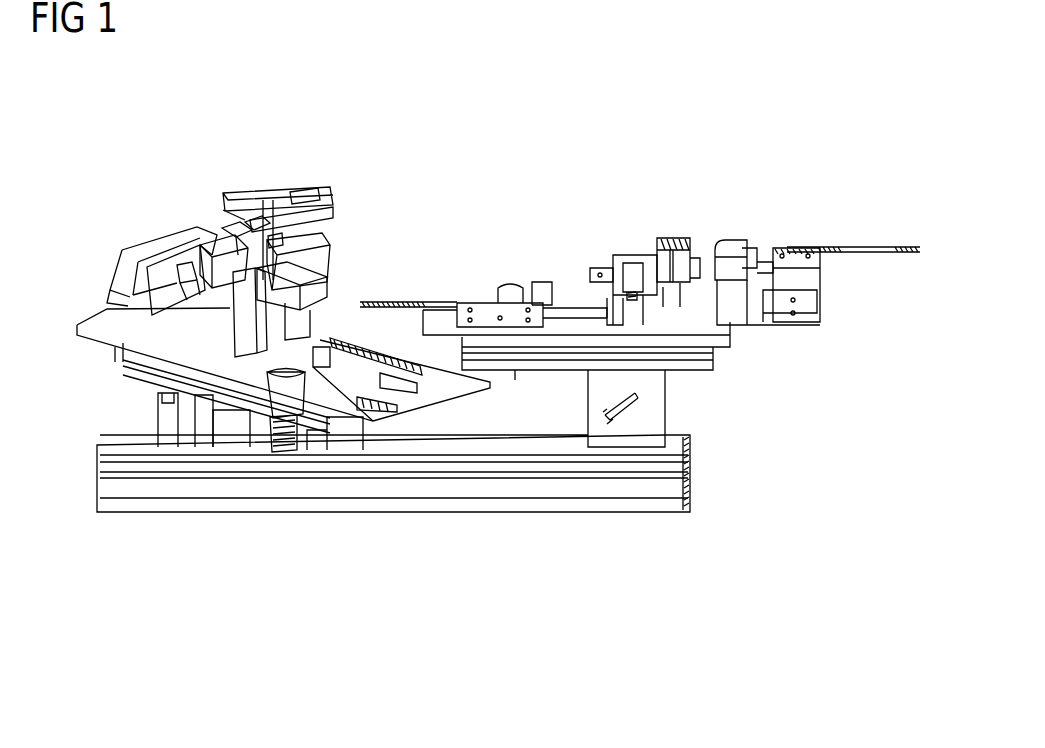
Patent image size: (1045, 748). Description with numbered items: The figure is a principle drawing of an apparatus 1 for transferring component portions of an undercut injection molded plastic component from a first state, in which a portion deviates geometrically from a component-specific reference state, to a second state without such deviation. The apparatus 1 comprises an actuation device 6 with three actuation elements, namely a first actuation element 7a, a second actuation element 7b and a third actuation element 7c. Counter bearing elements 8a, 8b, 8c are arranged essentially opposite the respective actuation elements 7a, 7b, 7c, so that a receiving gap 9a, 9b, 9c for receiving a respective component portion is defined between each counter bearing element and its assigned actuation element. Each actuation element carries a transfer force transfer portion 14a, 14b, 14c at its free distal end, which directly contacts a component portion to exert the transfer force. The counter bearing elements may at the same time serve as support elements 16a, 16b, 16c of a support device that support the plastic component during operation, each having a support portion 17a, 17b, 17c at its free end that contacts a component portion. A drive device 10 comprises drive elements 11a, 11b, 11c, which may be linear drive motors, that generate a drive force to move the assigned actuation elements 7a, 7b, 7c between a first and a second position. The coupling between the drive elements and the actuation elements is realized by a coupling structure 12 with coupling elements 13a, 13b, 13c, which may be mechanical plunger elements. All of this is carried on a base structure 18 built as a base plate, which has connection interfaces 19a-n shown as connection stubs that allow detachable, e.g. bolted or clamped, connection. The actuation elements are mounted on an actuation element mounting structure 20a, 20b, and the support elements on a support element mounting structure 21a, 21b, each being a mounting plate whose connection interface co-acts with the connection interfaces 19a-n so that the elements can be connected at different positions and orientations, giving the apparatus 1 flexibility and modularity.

The apparatus 1 is at (758, 90).
The actuation device 6 is at (538, 190).
The first actuation element 7a is at (186, 327).
The second actuation element 7b is at (337, 187).
The third actuation element 7c is at (620, 240).
The counter bearing element 8a is at (127, 234).
The support element 16a is at (133, 248).
The counter bearing element 8b is at (364, 255).
The support element 16b is at (313, 233).
The counter bearing element 8c is at (767, 244).
The support element 16c is at (737, 243).
The receiving gap 9a is at (172, 270).
The receiving gap 9b is at (322, 213).
The receiving gap 9c is at (707, 240).
The drive device 10 is at (242, 535).
The drive element 11a is at (350, 362).
The drive element 11b is at (233, 230).
The drive element 11c is at (487, 293).
The coupling structure 12 is at (255, 357).
The coupling element 13a is at (307, 340).
The coupling element 13b is at (253, 227).
The coupling element 13c is at (563, 318).
The transfer force transfer portion 14a is at (183, 280).
The transfer force transfer portion 14b is at (302, 200).
The transfer force transfer portion 14c is at (680, 272).
The support portion 17a is at (188, 243).
The support portion 17b is at (277, 237).
The support portion 17c is at (722, 275).
The base structure 18 is at (705, 498).
The connection interfaces 19a-n is at (170, 430).
The actuation element mounting structure 20a is at (390, 455).
The support element mounting structure 21a is at (417, 392).
The actuation element mounting structure 20b is at (412, 462).
The support element mounting structure 21b is at (550, 327).